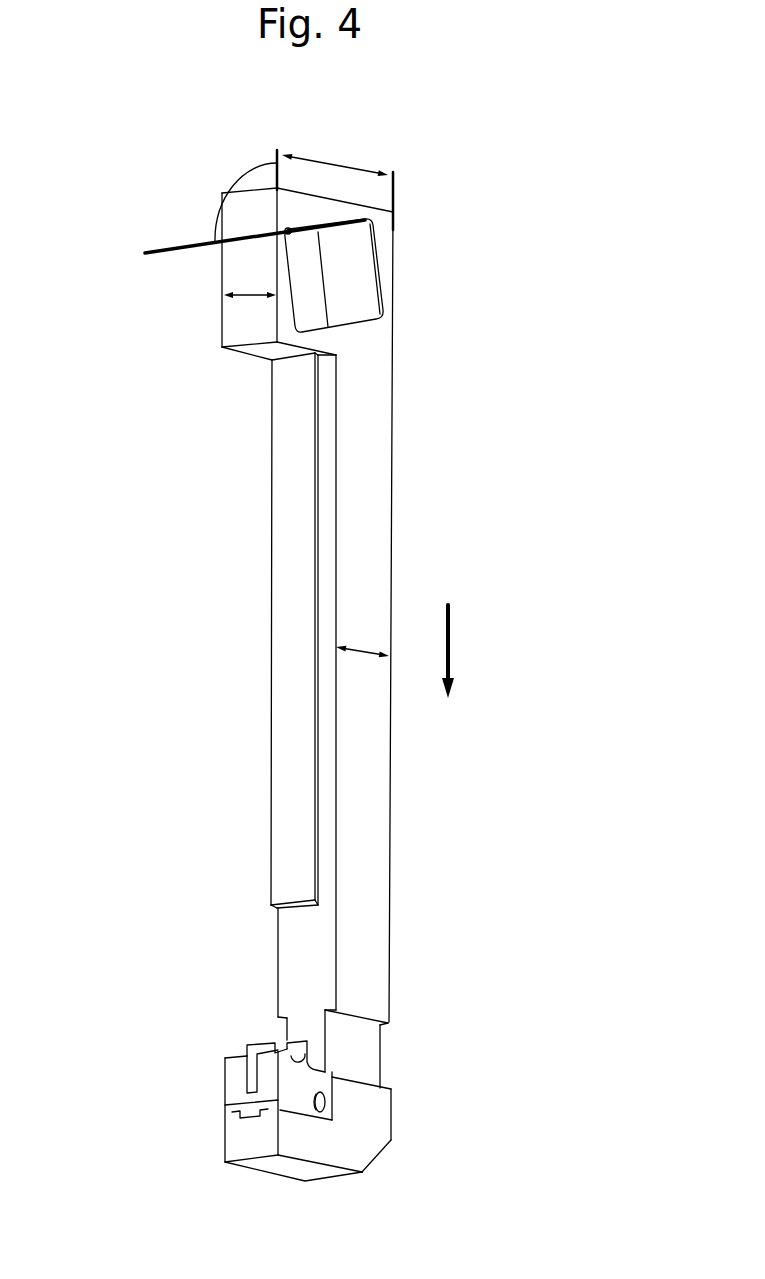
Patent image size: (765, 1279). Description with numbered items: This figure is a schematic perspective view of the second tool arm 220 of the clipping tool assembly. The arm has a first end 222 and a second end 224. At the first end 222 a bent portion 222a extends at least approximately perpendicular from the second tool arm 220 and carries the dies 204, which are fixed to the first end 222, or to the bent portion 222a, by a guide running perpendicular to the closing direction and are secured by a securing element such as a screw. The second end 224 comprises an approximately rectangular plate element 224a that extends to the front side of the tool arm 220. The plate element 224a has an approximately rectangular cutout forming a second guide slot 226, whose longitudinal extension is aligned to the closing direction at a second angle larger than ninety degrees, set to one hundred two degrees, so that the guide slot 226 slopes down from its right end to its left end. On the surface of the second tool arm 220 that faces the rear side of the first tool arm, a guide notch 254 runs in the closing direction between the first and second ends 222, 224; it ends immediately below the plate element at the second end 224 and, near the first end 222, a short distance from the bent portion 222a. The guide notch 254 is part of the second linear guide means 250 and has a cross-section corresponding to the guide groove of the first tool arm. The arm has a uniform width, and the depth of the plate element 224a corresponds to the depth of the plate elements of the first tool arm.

The second tool arm 220 is at (89, 145).
The second end 224 is at (388, 253).
The plate element 224a is at (240, 257).
The second guide slot 226 is at (312, 280).
The first end 222 is at (375, 1000).
The bent portion 222a is at (343, 1147).
The dies 204 is at (238, 1083).
The second linear guide means 250 is at (196, 580).
The guide notch 254 is at (290, 603).